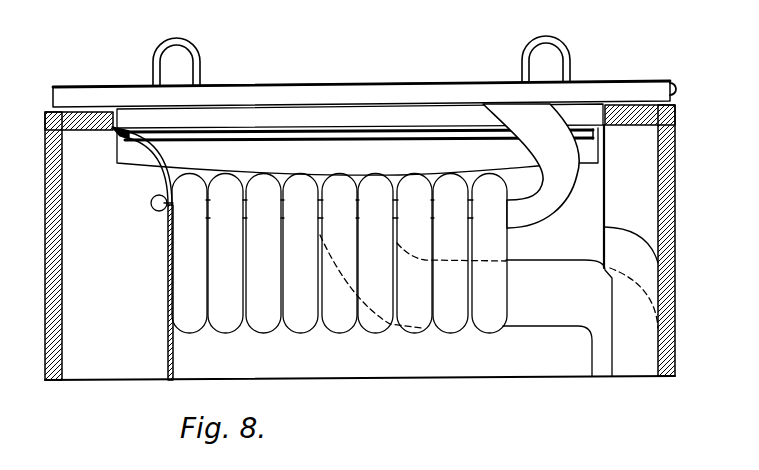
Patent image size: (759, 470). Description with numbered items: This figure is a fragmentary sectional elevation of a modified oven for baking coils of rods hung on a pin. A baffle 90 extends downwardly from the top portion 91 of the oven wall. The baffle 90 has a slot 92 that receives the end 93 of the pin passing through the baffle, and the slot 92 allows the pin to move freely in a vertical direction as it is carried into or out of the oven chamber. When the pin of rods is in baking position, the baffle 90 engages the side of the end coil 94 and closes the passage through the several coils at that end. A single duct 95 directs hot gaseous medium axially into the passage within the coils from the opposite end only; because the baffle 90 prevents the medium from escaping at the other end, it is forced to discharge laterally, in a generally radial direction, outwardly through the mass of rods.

The baffle 90 is at (170, 348).
The top portion of the oven wall 91 is at (71, 128).
The slot 92 is at (167, 181).
The end of the pin 93 is at (157, 208).
The end coil 94 is at (184, 261).
The duct 95 is at (606, 233).